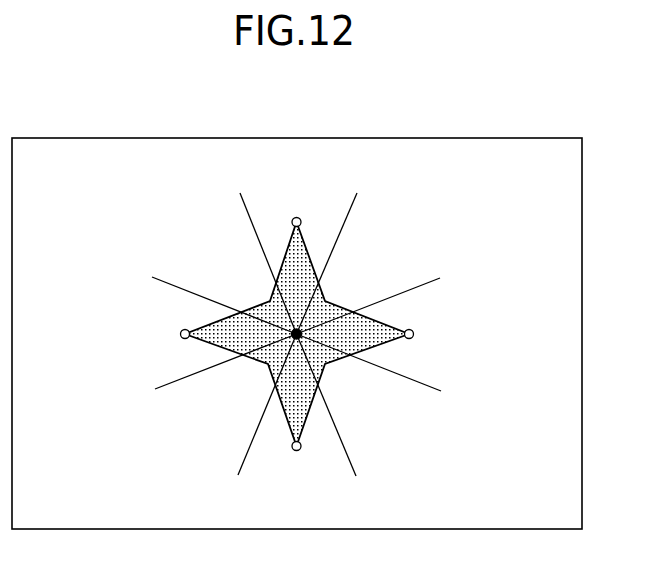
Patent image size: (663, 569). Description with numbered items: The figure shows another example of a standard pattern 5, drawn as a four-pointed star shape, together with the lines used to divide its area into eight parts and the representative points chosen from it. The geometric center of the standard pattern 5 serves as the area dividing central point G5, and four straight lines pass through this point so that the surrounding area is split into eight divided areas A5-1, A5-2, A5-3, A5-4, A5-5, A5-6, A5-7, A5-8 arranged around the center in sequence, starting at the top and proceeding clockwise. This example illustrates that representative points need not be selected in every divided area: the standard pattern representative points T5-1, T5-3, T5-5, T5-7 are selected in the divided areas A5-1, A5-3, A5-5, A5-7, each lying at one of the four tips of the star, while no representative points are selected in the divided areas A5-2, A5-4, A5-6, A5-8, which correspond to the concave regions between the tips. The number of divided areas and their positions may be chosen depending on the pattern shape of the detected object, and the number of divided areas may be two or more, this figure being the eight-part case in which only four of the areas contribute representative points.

The standard pattern 5 is at (296, 334).
The area dividing central point G5 is at (296, 334).
The divided area A5-1 is at (276, 241).
The divided area A5-2 is at (367, 263).
The divided area A5-3 is at (393, 312).
The divided area A5-4 is at (369, 393).
The divided area A5-5 is at (314, 430).
The divided area A5-6 is at (221, 404).
The divided area A5-7 is at (201, 348).
The divided area A5-8 is at (224, 282).
The standard pattern representative point T5-1 is at (294, 218).
The standard pattern representative point T5-3 is at (412, 338).
The standard pattern representative point T5-5 is at (300, 450).
The standard pattern representative point T5-7 is at (182, 338).